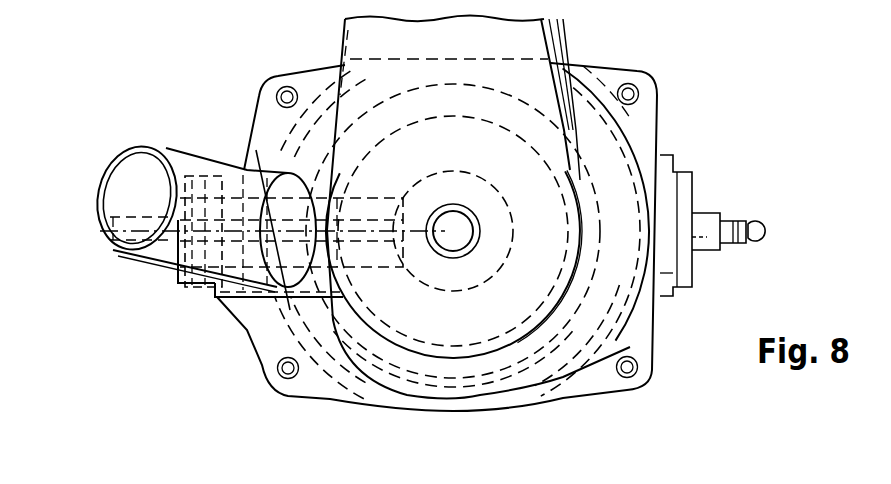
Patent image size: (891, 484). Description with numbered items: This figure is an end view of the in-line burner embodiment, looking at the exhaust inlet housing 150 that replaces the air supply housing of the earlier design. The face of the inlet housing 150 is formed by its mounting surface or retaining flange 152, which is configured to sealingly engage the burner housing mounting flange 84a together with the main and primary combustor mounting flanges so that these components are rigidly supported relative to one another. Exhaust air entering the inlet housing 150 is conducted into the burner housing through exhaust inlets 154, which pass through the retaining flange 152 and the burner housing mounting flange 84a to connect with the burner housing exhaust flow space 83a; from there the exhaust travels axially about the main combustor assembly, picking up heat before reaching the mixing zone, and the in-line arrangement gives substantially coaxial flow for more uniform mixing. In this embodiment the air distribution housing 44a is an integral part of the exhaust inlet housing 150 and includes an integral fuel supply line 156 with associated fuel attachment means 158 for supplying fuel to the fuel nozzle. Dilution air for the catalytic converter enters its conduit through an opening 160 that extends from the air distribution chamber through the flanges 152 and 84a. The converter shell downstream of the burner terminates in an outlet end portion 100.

The outlet end portion 100 is at (657, 109).
The exhaust inlet housing 150 is at (600, 173).
The retaining flange 152 is at (603, 80).
The exhaust inlets 154 is at (597, 313).
The fuel supply line 156 is at (240, 306).
The fuel attachment means 158 is at (175, 283).
The opening 160 is at (200, 163).
The air distribution housing 44a is at (330, 192).
The burner housing exhaust flow space 83a is at (269, 9).
The burner housing mounting flange 84a is at (109, 5).